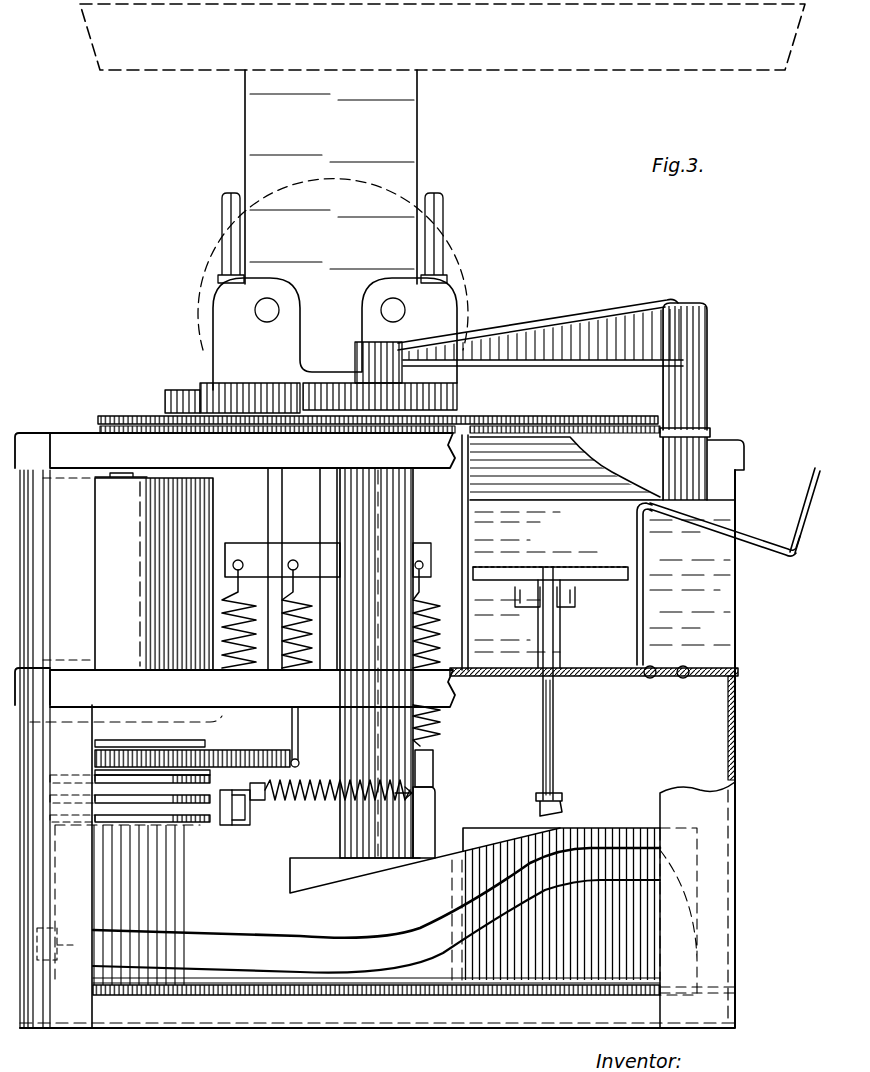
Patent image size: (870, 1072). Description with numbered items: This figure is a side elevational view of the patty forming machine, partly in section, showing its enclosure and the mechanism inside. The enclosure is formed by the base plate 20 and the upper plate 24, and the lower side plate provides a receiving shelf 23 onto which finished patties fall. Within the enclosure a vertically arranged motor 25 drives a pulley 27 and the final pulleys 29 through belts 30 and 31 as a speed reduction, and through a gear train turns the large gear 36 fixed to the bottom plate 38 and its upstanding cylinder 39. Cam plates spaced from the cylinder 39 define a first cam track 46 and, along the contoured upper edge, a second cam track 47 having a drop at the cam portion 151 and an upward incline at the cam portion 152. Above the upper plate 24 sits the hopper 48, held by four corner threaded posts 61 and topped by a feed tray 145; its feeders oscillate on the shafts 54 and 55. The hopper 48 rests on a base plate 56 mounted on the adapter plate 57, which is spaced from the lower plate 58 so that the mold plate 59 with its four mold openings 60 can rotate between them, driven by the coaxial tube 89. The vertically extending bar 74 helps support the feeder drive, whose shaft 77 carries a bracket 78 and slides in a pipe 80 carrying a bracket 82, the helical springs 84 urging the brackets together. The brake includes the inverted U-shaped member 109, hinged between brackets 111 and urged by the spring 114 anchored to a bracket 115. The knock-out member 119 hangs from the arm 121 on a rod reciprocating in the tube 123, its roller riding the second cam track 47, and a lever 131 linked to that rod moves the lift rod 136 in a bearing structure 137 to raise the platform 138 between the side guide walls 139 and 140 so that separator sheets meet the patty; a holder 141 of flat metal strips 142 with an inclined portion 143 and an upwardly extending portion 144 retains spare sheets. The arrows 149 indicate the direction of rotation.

The base plate 20 is at (117, 1030).
The receiving shelf 23 is at (592, 676).
The upper plate 24 is at (74, 432).
The motor 25 is at (120, 554).
The pulley 27 is at (287, 748).
The pulleys 29 is at (103, 796).
The belt 30 is at (210, 752).
The belt 31 is at (187, 806).
The large gear 36 is at (193, 995).
The bottom plate 38 is at (287, 984).
The cylinder 39 is at (243, 948).
The first cam track 46 is at (441, 920).
The second cam track 47 is at (452, 845).
The hopper 48 is at (388, 127).
The shaft 54 is at (262, 312).
The shaft 55 is at (402, 308).
The base plate 56 is at (202, 384).
The adapter plate 57 is at (165, 398).
The lower plate 58 is at (262, 429).
The mold plate 59 is at (112, 416).
The mold openings 60 is at (586, 416).
The threaded posts 61 is at (221, 212).
The bar 74 is at (268, 492).
The shaft 77 is at (326, 522).
The bracket 78 is at (262, 557).
The pipe 80 is at (235, 687).
The bracket 82 is at (424, 768).
The springs 84 is at (443, 608).
The tube 89 is at (388, 522).
The inverted U-shaped member 109 is at (241, 827).
The brackets 111 is at (258, 800).
The spring 114 is at (330, 802).
The bracket 115 is at (424, 788).
The knock-out member 119 is at (403, 372).
The arm 121 is at (594, 325).
The tube 123 is at (703, 460).
The lever 131 is at (563, 806).
The lift rod 136 is at (554, 745).
The bearing structure 137 is at (562, 623).
The platform 138 is at (503, 566).
The side guide wall 139 is at (497, 506).
The side guide wall 140 is at (561, 518).
The holder 141 is at (651, 611).
The flat metal strips 142 is at (644, 547).
The inclined portion 143 is at (753, 538).
The upwardly extending portion 144 is at (806, 483).
The tray 145 is at (157, 72).
The arrows 149 is at (600, 840).
The cam portion 151 is at (292, 841).
The cam portion 152 is at (318, 877).